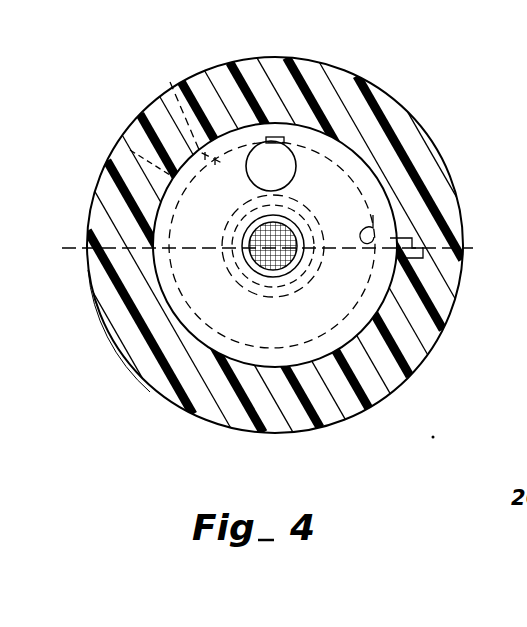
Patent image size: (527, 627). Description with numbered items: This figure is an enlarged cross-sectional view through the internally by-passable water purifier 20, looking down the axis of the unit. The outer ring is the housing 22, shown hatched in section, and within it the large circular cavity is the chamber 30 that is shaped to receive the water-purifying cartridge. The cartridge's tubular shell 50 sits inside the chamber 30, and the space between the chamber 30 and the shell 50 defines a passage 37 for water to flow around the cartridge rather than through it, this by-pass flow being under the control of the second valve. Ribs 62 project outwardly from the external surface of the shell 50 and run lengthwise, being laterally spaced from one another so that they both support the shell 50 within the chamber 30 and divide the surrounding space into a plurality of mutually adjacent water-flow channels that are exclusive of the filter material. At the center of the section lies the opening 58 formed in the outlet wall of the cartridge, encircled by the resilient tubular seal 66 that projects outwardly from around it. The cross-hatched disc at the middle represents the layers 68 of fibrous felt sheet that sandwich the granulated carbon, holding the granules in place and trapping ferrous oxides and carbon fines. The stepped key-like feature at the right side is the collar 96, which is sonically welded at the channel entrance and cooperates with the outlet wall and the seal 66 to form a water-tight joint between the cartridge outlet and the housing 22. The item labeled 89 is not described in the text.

The internally by-passable water purifier 20 is at (339, 388).
The housing 22 is at (427, 131).
The chamber 30 is at (166, 77).
The passage 37 is at (150, 170).
The tubular shell 50 is at (273, 140).
The opening 58 is at (283, 263).
The ribs 62 is at (269, 251).
The tubular seal 66 is at (310, 251).
The layers of fibrous sheet 68 is at (252, 239).
The hole 89 is at (296, 158).
The collar 96 is at (373, 222).